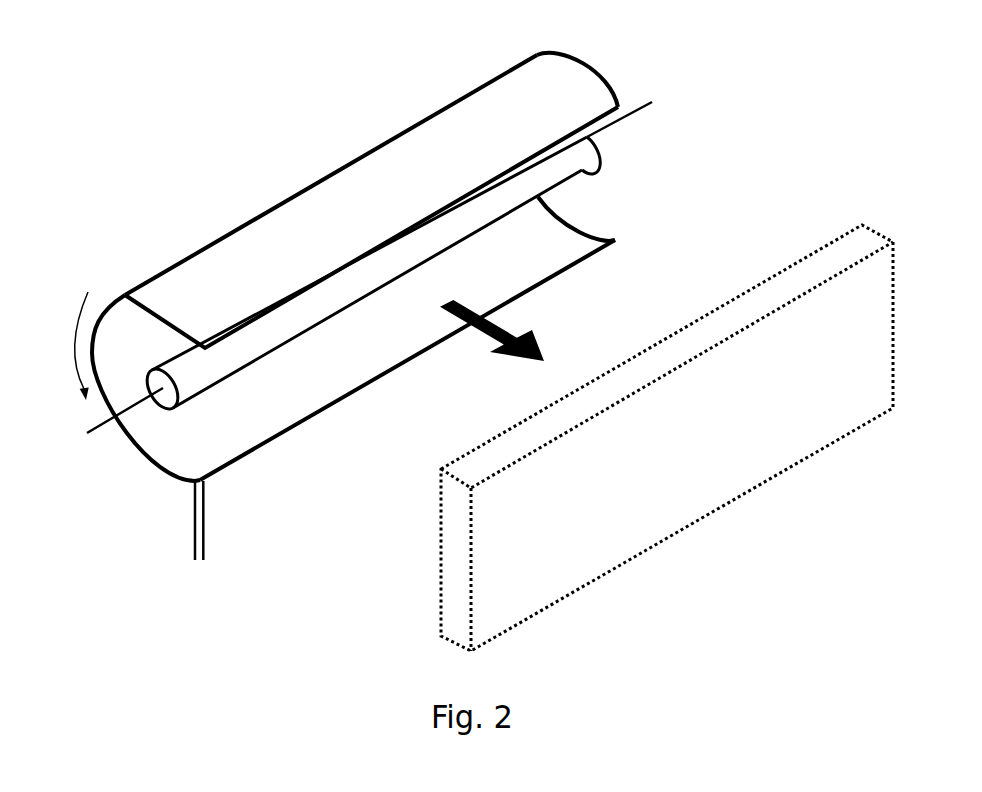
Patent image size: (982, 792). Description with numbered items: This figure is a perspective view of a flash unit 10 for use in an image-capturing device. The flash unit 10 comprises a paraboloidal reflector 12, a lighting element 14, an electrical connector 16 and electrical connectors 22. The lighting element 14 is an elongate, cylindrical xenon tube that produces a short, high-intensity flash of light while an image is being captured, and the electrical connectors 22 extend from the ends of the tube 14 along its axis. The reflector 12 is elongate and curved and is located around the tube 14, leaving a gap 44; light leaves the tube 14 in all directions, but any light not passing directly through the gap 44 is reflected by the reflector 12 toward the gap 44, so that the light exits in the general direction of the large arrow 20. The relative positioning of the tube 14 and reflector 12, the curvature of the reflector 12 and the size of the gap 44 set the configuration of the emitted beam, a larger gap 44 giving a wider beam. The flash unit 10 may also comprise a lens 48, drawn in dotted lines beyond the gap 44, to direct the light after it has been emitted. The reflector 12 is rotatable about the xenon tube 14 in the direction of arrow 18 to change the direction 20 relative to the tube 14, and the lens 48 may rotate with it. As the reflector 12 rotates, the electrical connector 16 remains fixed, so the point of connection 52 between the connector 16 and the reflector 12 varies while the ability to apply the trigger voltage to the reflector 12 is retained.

The flash unit 10 is at (373, 300).
The paraboloidal reflector 12 is at (383, 267).
The lighting element 14 is at (255, 348).
The electrical connector 16 is at (208, 533).
The arrow 18 is at (75, 342).
The large arrow 20 is at (545, 342).
The electrical connectors 22 is at (633, 102).
The gap 44 is at (215, 410).
The lens 48 is at (813, 253).
The point of connection 52 is at (207, 481).